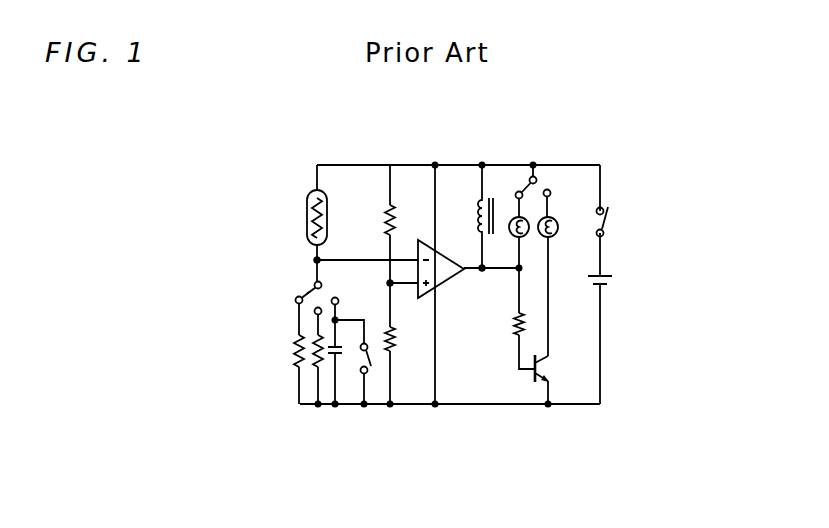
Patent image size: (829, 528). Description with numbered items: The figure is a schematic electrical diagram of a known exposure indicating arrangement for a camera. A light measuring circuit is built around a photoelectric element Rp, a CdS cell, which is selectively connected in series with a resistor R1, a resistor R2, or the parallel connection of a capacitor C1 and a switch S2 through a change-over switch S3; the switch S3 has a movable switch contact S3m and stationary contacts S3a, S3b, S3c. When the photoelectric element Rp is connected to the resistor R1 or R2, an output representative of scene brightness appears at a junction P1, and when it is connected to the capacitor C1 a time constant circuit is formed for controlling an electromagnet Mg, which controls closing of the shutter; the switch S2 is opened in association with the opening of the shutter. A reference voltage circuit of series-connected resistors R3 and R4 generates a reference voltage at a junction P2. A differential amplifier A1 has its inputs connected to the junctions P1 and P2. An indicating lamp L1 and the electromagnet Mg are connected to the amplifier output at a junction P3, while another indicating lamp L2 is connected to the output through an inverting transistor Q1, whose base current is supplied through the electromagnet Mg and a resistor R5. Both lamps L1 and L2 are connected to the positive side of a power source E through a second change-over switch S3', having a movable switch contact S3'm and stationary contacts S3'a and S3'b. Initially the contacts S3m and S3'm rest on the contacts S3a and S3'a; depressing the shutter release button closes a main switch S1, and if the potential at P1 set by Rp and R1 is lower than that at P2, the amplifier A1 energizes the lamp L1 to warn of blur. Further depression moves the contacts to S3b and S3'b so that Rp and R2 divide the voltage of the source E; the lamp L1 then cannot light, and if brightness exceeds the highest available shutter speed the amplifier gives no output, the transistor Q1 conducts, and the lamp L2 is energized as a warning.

The photoelectric element Rp is at (306, 215).
The change-over switch S3 is at (273, 287).
The movable switch contact S3m is at (307, 293).
The stationary contact S3a is at (296, 300).
The stationary contact S3b is at (314, 311).
The stationary contact S3c is at (332, 303).
The junction P1 is at (320, 256).
The junction P2 is at (388, 282).
The junction P3 is at (482, 271).
The resistor R1 is at (296, 357).
The resistor R2 is at (315, 372).
The resistor R3 is at (391, 203).
The resistor R4 is at (394, 352).
The resistor R5 is at (519, 337).
The capacitor C1 is at (344, 356).
The switch S2 is at (371, 360).
The differential amplifier A1 is at (440, 294).
The electromagnet Mg is at (480, 222).
The indicating lamp L1 is at (513, 233).
The indicating lamp L2 is at (555, 231).
The change-over switch S3' is at (568, 153).
The movable switch contact S3'm is at (566, 153).
The stationary contact S3'a is at (483, 150).
The stationary contact S3'b is at (625, 185).
The main switch S1 is at (610, 225).
The power source E is at (613, 283).
The inverting transistor Q1 is at (549, 369).